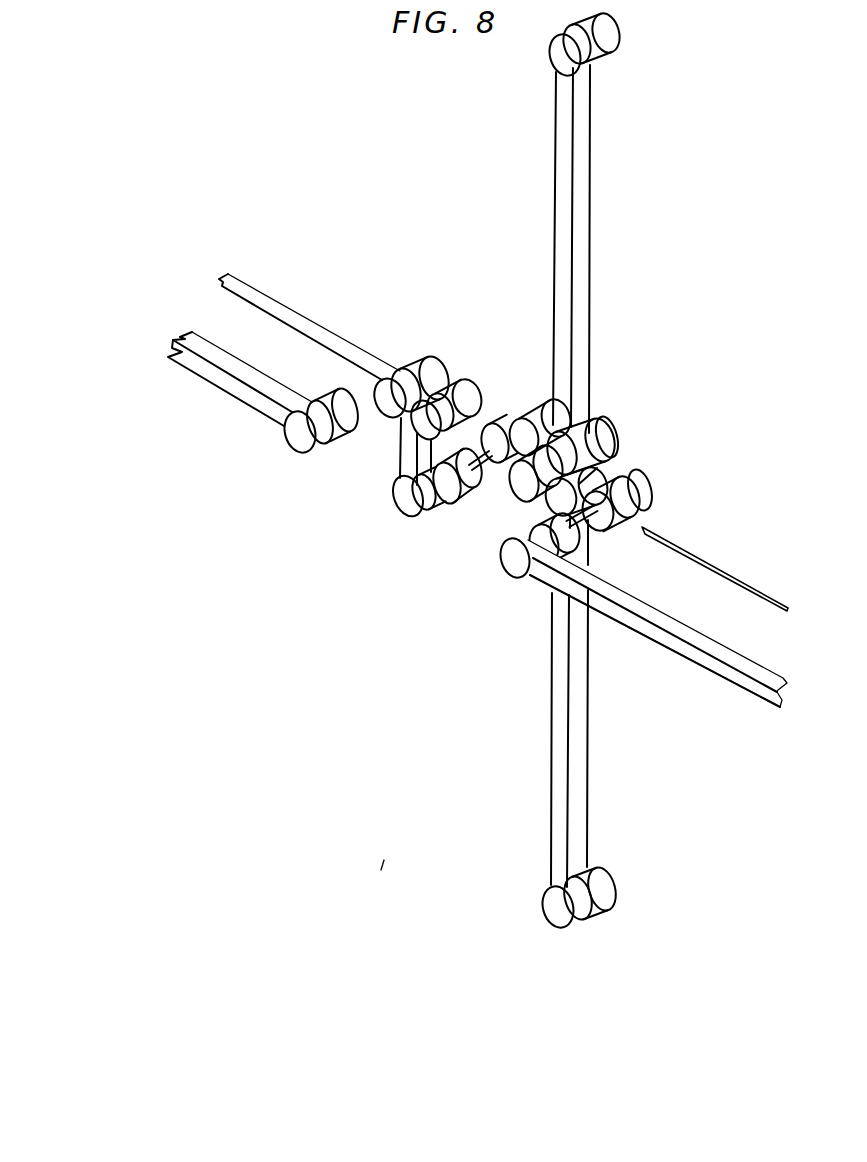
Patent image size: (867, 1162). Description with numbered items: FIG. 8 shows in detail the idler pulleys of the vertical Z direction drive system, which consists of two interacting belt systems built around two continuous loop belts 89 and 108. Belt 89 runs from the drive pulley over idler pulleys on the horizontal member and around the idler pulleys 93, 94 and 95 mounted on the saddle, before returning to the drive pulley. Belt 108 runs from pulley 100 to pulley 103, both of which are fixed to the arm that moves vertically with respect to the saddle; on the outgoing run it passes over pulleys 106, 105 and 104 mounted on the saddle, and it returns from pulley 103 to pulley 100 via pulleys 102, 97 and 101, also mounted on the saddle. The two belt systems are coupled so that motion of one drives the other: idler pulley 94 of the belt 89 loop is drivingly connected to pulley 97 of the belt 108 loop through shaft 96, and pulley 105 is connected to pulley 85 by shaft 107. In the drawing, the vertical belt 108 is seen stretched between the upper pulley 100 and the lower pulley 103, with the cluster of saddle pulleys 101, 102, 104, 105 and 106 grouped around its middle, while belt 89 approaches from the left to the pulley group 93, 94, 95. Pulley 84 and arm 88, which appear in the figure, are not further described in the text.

The roller 84 is at (303, 442).
The pulley 85 is at (515, 563).
The arm 88 is at (690, 660).
The continuous loop belt 89 is at (281, 313).
The idler pulley 93 is at (420, 358).
The idler pulley 94 is at (412, 502).
The idler pulley 95 is at (455, 378).
The shaft 96 is at (465, 496).
The pulley 97 is at (500, 410).
The pulley 100 is at (620, 36).
The pulley 101 is at (550, 420).
The pulley 102 is at (523, 482).
The pulley 103 is at (546, 906).
The pulley 104 is at (583, 482).
The pulley 105 is at (637, 520).
The pulley 106 is at (597, 427).
The shaft 107 is at (590, 538).
The continuous loop belt 108 is at (587, 157).